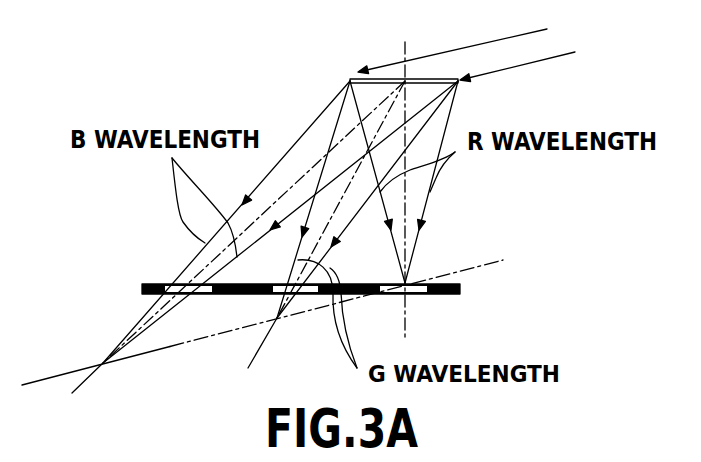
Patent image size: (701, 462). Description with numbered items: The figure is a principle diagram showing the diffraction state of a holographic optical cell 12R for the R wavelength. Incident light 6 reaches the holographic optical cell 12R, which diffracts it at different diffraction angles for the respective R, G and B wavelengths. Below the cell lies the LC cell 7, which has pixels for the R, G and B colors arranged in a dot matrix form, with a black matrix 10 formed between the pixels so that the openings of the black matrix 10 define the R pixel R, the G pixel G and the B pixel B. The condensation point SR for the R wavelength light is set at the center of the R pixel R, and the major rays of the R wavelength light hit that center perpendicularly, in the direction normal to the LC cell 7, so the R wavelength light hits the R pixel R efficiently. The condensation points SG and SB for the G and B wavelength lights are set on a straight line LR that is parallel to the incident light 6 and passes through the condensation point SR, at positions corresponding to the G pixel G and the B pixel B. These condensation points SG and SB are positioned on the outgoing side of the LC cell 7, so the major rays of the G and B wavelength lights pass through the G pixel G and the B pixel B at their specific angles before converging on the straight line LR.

The holographic optical cell for the R wavelength 12R is at (433, 79).
The incident light 6 is at (553, 10).
The LC cell 7 is at (158, 276).
The black matrix 10 is at (243, 295).
The B pixel B is at (207, 294).
The G pixel G is at (315, 294).
The R pixel R is at (420, 294).
The condensation point for the B wavelength light SB is at (100, 360).
The condensation point for the G wavelength light SG is at (277, 323).
The condensation point for the R wavelength light SR is at (406, 282).
The straight line LR is at (492, 263).